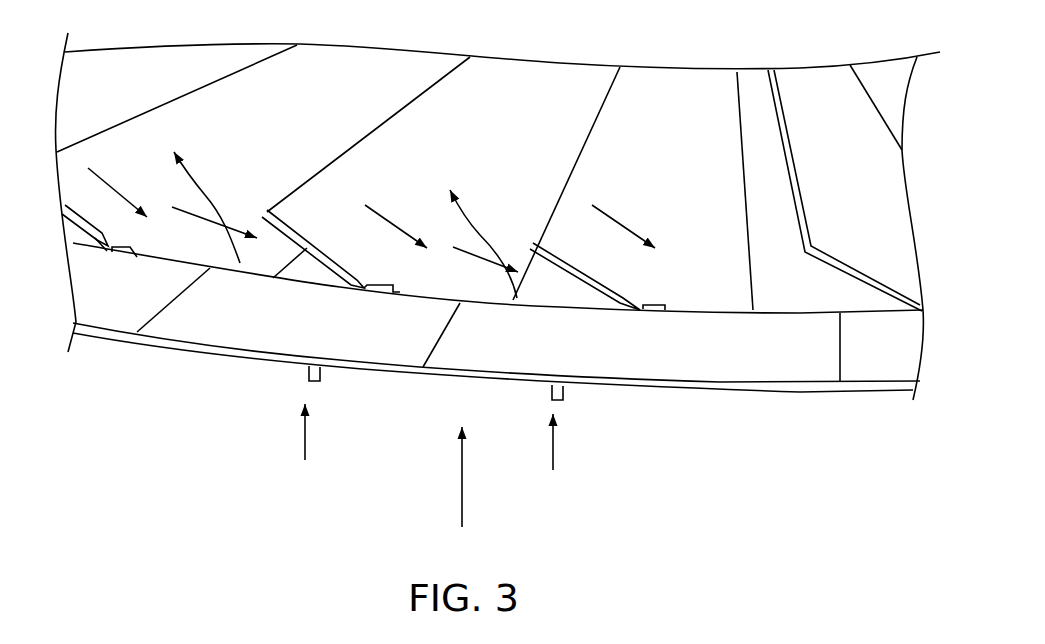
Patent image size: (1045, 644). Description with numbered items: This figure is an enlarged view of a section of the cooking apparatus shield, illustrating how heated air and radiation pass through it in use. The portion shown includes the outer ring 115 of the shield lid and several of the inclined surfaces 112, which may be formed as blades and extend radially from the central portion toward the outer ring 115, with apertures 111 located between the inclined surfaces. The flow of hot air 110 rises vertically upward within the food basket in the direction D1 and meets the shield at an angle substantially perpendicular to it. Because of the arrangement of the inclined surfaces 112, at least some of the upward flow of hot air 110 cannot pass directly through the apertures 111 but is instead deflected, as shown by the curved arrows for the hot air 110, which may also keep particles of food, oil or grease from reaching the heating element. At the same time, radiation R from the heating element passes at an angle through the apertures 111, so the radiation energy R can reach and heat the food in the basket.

The flow of hot air 110 is at (222, 215).
The apertures 111 is at (565, 288).
The inclined surfaces 112 is at (373, 247).
The outer ring 115 is at (250, 328).
The radiation R is at (112, 183).
The direction D1 is at (462, 498).